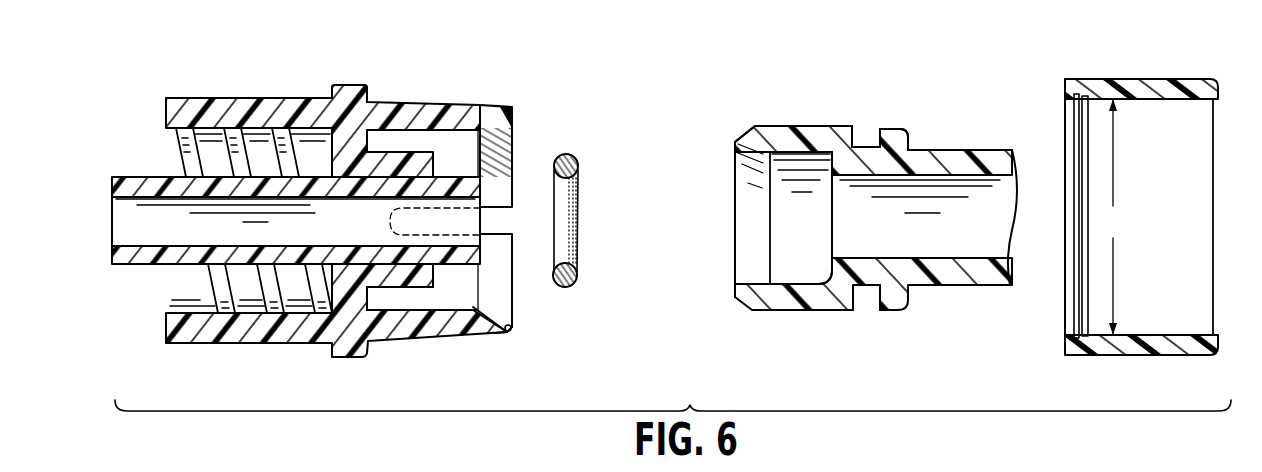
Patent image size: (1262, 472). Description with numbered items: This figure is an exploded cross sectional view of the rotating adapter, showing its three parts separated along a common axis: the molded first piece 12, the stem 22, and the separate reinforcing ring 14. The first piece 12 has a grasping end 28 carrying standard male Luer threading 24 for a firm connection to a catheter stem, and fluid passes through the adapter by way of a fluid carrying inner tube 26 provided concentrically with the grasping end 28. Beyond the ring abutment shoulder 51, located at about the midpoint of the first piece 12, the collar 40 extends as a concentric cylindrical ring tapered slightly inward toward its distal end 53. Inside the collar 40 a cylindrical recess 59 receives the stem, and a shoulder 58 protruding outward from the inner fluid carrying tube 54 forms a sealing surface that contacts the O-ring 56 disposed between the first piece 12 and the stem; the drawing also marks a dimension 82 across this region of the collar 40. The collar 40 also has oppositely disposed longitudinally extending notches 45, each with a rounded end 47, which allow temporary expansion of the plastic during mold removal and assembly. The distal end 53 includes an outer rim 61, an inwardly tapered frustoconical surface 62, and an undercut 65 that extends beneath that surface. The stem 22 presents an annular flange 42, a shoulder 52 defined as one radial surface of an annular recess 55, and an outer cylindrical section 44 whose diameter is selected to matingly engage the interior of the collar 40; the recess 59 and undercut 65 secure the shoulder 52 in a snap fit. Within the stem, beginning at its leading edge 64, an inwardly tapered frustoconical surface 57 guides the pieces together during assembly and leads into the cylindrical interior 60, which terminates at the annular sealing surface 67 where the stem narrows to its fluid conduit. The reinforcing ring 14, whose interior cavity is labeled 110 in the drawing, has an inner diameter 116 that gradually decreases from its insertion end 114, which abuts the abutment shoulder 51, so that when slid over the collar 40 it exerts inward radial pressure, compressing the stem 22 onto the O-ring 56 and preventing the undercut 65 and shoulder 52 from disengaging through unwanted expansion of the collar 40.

The first piece 12 is at (288, 97).
The reinforcing ring 14 is at (1137, 79).
The stem 22 is at (920, 291).
The Luer threading 24 is at (221, 296).
The fluid carrying inner tube 26 is at (139, 176).
The grasping end 28 is at (215, 92).
The collar 40 is at (448, 101).
The annular flange 42 is at (897, 128).
The outer cylindrical section 44 is at (803, 131).
The longitudinally extending notches 45 is at (503, 222).
The rounded end 47 is at (390, 224).
The ring abutment shoulder 51 is at (368, 87).
The shoulder 52 is at (861, 128).
The distal end 53 is at (511, 346).
The inner fluid carrying tube 54 is at (476, 188).
The annular recess 55 is at (867, 294).
The O-ring 56 is at (580, 159).
The frustoconical surface 57 is at (735, 139).
The shoulder 58 is at (434, 285).
The cylindrical recess 59 is at (378, 302).
The cylindrical interior 60 is at (740, 244).
The outer rim 61 is at (513, 331).
The frustoconical surface 62 is at (501, 307).
The leading edge 64 is at (736, 304).
The undercut 65 is at (474, 312).
The annular sealing surface 67 is at (827, 268).
The slot 82 is at (448, 131).
The cavity 110 is at (1128, 274).
The insertion end 114 is at (1066, 91).
The inner diameter 116 is at (1113, 217).